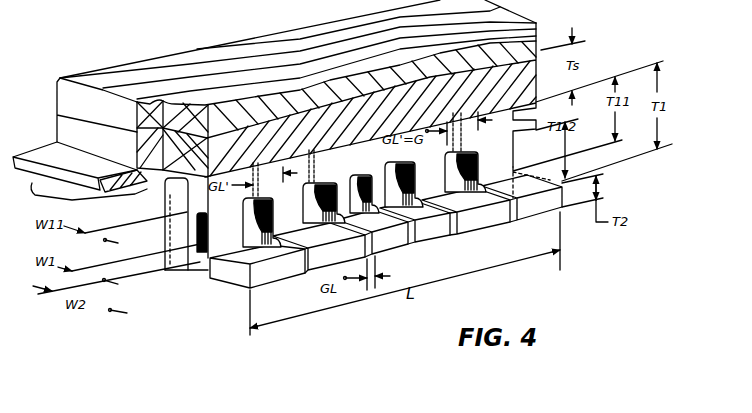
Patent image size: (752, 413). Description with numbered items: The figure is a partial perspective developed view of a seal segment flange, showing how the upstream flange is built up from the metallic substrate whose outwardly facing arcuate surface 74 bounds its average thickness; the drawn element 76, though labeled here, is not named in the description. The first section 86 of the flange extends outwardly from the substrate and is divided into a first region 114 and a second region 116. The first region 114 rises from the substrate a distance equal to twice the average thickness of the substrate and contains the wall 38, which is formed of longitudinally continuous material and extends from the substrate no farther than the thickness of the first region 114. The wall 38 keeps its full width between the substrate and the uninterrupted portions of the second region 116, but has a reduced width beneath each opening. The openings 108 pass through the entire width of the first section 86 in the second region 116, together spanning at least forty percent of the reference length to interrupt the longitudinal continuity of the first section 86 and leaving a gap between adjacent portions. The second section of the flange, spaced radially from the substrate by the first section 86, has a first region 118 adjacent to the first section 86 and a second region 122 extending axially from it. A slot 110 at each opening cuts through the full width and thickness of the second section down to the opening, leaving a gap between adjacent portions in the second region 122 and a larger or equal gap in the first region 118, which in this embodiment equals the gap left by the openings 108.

The substrate 76 is at (88, 74).
The outwardly facing arcuate surface 74 is at (160, 158).
The first section 86 is at (152, 191).
The first region 114 is at (161, 187).
The wall 38 is at (176, 224).
The second region 116 is at (167, 255).
The first region 118 is at (216, 250).
The openings 108 is at (386, 169).
The slot 110 is at (451, 230).
The second region 122 is at (230, 258).